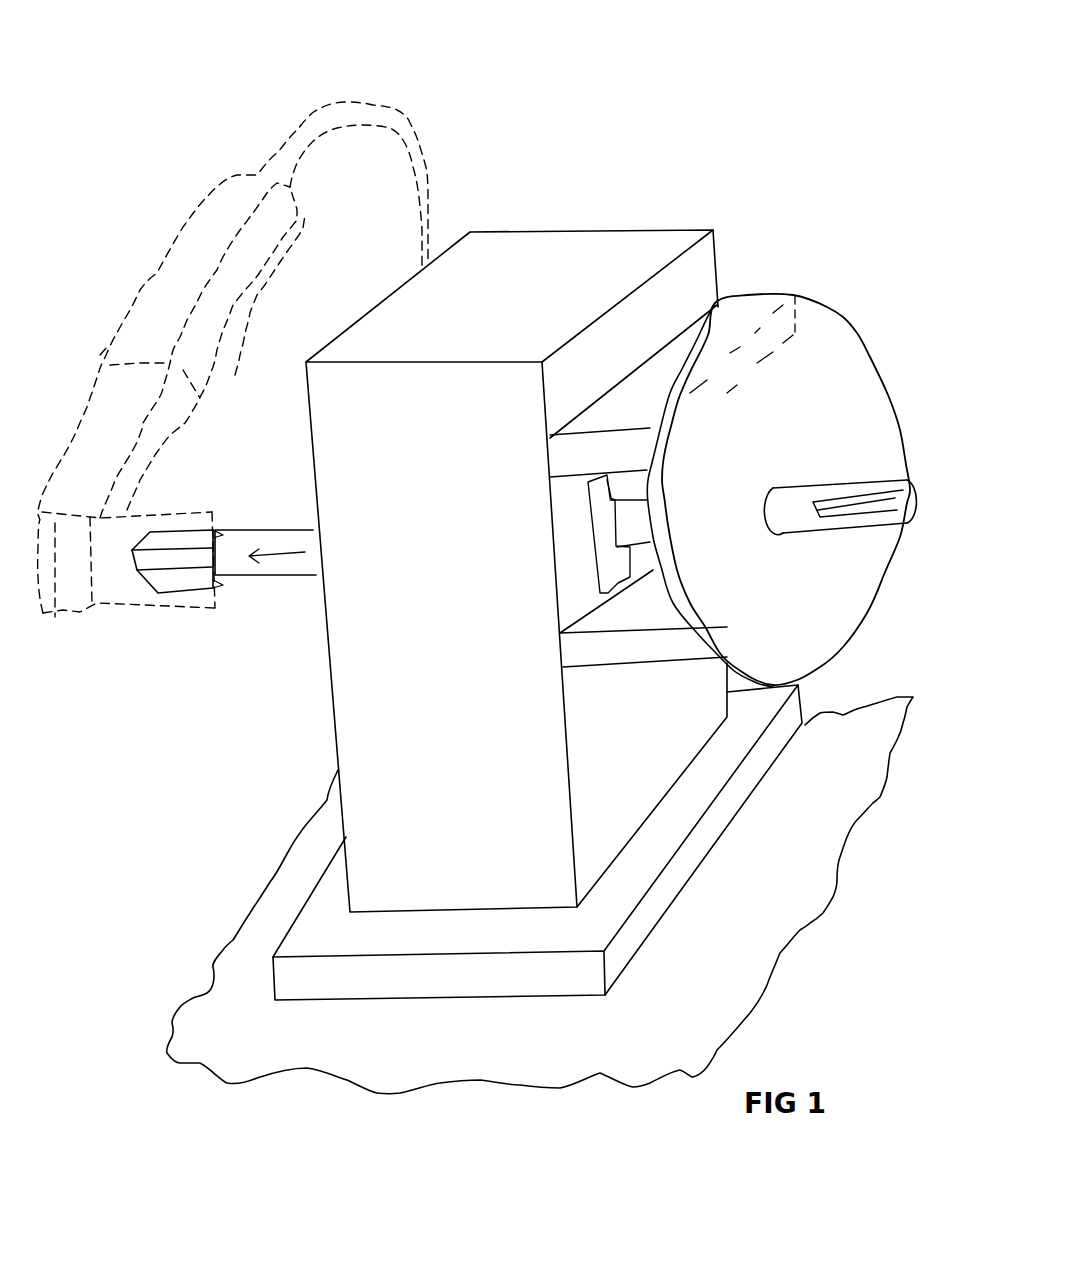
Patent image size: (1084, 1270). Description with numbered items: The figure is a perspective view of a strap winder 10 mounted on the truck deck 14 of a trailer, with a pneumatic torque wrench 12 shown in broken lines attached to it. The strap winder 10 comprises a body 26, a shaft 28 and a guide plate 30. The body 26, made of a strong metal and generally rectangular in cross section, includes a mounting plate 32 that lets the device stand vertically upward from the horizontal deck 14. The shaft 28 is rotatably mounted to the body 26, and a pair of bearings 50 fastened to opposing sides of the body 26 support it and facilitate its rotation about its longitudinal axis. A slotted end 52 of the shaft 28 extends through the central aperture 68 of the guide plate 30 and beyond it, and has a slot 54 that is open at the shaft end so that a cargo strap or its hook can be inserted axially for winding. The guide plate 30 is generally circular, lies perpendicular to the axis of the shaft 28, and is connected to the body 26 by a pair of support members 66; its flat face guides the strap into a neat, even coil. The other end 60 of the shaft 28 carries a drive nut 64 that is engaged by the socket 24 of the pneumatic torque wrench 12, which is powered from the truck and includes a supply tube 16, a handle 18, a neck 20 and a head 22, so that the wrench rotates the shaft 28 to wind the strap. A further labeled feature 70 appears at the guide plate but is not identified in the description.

The strap winder 10 is at (253, 763).
The pneumatic torque wrench 12 is at (165, 252).
The truck deck 14 is at (218, 992).
The supply tube 16 is at (303, 127).
The handle 18 is at (218, 317).
The neck 20 is at (147, 463).
The head 22 is at (53, 615).
The socket 24 is at (182, 512).
The body 26 is at (658, 228).
The shaft 28 is at (283, 579).
The guide plate 30 is at (878, 380).
The mounting plate 32 is at (637, 870).
The bearings 50 is at (597, 532).
The slotted end 52 is at (857, 538).
The slot 54 is at (912, 497).
The other end 60 is at (242, 531).
The drive nut 64 is at (190, 583).
The support members 66 is at (653, 368).
The central aperture 68 is at (767, 487).
The rim 70 is at (643, 425).